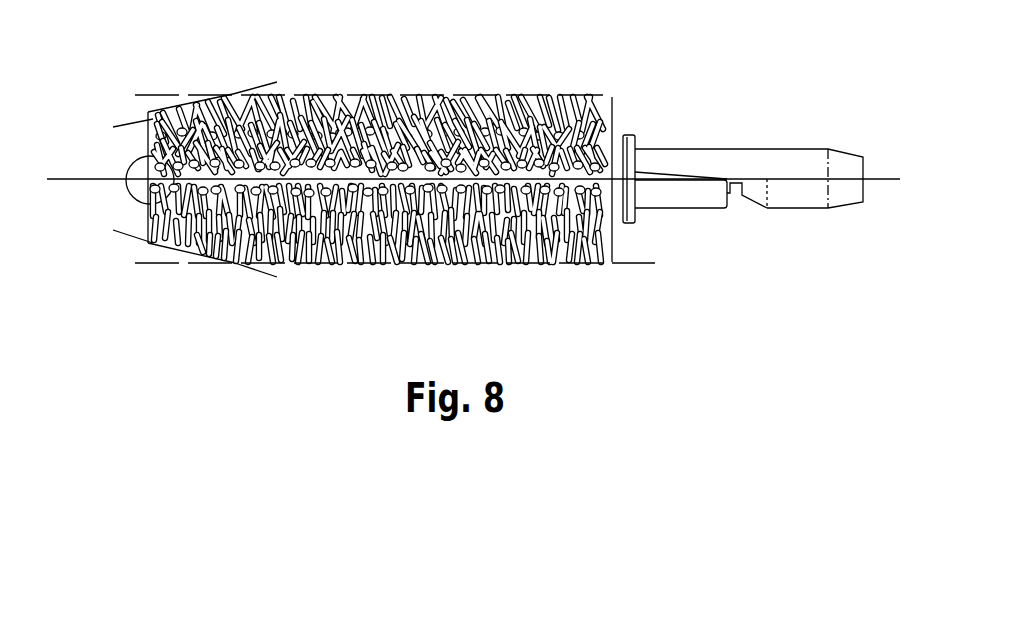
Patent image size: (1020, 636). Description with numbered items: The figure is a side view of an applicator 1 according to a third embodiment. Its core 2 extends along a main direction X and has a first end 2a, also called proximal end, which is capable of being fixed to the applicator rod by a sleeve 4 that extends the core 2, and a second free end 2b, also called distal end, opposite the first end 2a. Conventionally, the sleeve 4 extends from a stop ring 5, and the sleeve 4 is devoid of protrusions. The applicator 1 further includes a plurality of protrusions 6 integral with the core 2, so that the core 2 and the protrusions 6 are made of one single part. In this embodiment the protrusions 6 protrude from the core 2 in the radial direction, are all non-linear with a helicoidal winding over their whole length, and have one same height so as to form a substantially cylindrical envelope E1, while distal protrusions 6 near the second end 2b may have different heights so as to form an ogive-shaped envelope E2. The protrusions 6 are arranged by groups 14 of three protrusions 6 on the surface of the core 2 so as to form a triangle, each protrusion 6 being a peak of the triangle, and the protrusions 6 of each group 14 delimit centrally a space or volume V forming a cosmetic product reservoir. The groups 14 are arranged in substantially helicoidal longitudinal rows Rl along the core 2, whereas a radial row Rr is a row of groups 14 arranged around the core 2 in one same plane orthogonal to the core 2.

The applicator 1 is at (221, 77).
The core 2 is at (550, 100).
The first end of the core 2a is at (612, 157).
The second free end of the core 2b is at (134, 190).
The sleeve 4 is at (758, 154).
The stop ring 5 is at (635, 140).
The protrusions 6 is at (551, 257).
The groups of protrusions 14 is at (172, 197).
The substantially cylindrical envelope E1 is at (133, 120).
The ogive-shaped envelope E2 is at (303, 97).
The main direction X is at (73, 179).
The space or volume V is at (238, 263).
The longitudinal row Rl is at (633, 193).
The radial row Rr is at (598, 272).